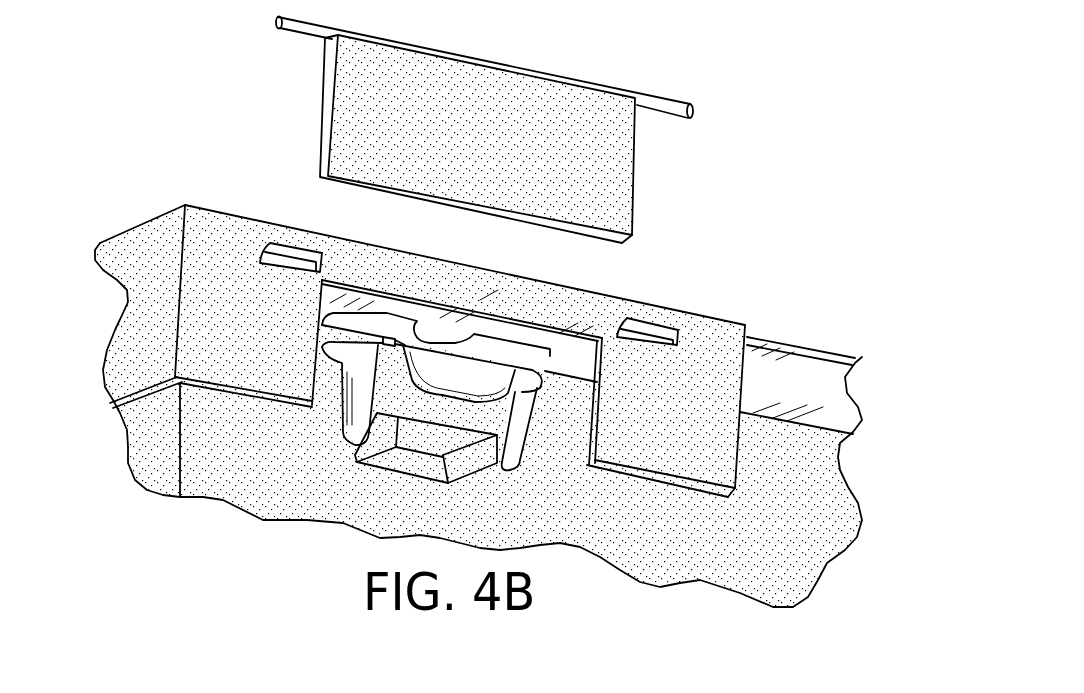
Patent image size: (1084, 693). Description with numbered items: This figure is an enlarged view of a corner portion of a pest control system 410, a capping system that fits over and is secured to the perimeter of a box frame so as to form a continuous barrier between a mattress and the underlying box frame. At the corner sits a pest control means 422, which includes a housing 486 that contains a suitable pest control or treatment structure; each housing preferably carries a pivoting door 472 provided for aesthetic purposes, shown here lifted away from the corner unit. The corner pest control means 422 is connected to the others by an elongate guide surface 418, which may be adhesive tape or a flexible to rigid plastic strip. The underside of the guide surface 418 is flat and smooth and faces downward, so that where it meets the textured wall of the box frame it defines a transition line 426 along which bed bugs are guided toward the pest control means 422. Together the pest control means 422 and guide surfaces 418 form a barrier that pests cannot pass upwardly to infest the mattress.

The pest control system 410 is at (199, 160).
The pivoting door 472 is at (610, 168).
The pest control means 422 is at (709, 292).
The elongate guide surface 418 is at (788, 377).
The transition line 426 is at (803, 427).
The housing 486 is at (242, 352).